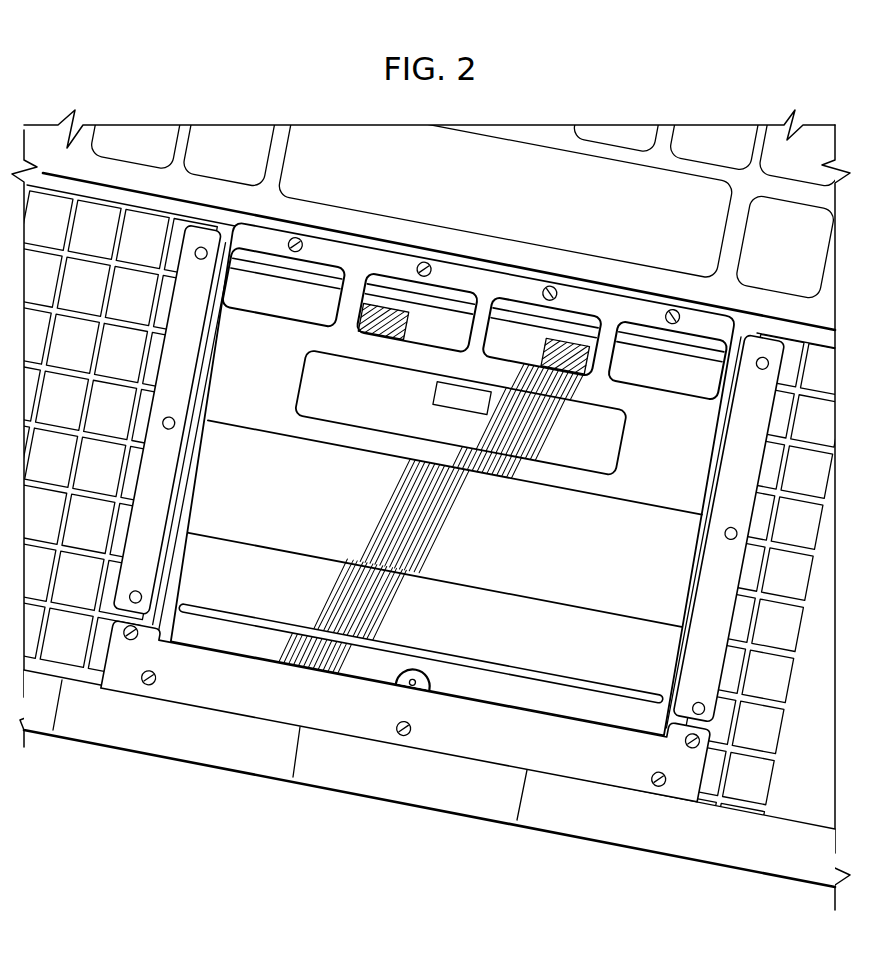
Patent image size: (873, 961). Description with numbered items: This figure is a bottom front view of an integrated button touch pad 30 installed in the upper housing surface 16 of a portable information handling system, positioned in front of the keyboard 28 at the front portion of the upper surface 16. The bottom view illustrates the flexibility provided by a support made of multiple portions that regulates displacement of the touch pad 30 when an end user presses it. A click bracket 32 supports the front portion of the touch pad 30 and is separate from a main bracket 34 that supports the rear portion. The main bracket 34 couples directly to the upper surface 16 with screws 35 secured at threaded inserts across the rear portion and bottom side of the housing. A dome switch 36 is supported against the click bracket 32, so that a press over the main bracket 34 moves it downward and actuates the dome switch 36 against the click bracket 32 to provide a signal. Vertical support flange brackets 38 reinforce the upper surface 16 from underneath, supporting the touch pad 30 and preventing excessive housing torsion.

The upper housing surface 16 is at (80, 652).
The keyboard 28 is at (710, 132).
The integrated button touch pad 30 is at (557, 63).
The click bracket 32 is at (207, 698).
The main bracket 34 is at (528, 474).
The screws 35 is at (428, 262).
The dome switch 36 is at (415, 692).
The vertical support flange brackets 38 is at (175, 450).